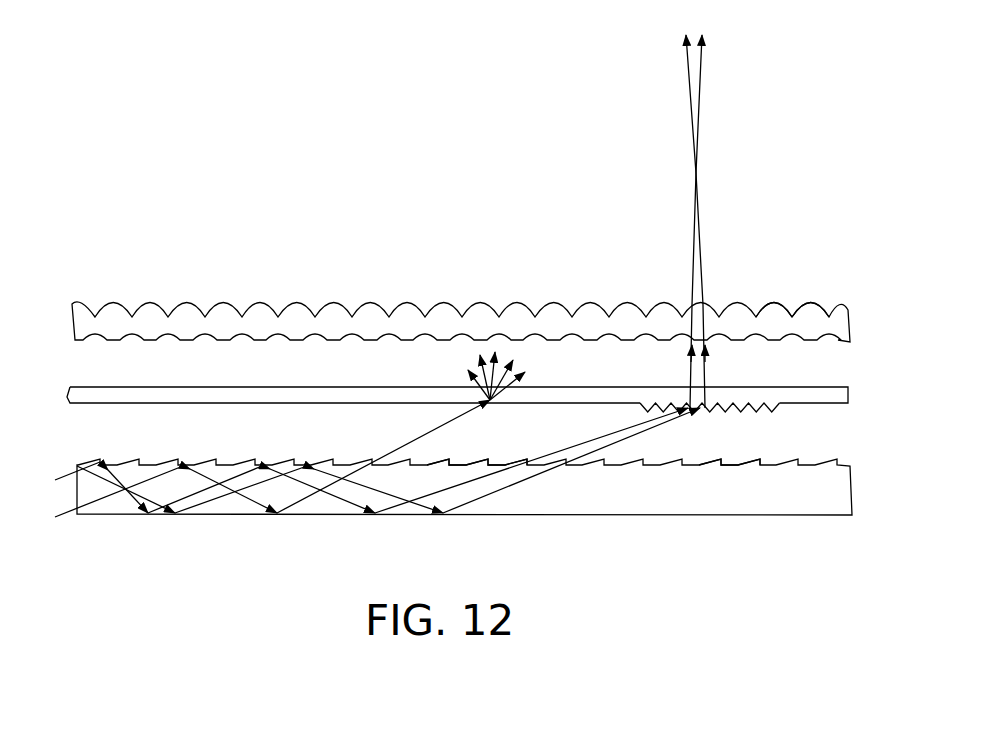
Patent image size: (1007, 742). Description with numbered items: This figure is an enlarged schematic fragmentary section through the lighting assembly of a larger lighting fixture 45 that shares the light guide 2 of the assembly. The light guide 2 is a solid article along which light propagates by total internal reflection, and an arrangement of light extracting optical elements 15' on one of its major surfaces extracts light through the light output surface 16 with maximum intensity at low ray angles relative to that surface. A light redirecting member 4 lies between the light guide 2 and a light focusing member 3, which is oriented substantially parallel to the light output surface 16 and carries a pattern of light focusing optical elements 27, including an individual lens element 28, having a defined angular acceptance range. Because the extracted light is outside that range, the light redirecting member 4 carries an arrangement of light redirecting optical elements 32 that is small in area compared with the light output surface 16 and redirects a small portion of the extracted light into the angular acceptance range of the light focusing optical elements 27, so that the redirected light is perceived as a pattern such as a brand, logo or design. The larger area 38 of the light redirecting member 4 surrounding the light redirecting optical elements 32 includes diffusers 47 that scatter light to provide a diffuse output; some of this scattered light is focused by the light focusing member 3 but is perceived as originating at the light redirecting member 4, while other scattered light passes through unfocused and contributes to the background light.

The lighting fixture 45 is at (120, 290).
The light focusing member 3 is at (738, 290).
The light focusing optical elements 27 is at (768, 305).
The lens element 28 is at (806, 305).
The light redirecting member 4 is at (795, 372).
The area of the light redirecting member 38 is at (213, 400).
The light redirecting optical elements 32 is at (710, 406).
The diffusers 47 is at (468, 392).
The light guide 2 is at (330, 535).
The light extracting optical elements 15' is at (494, 439).
The light output surface 16 is at (737, 467).